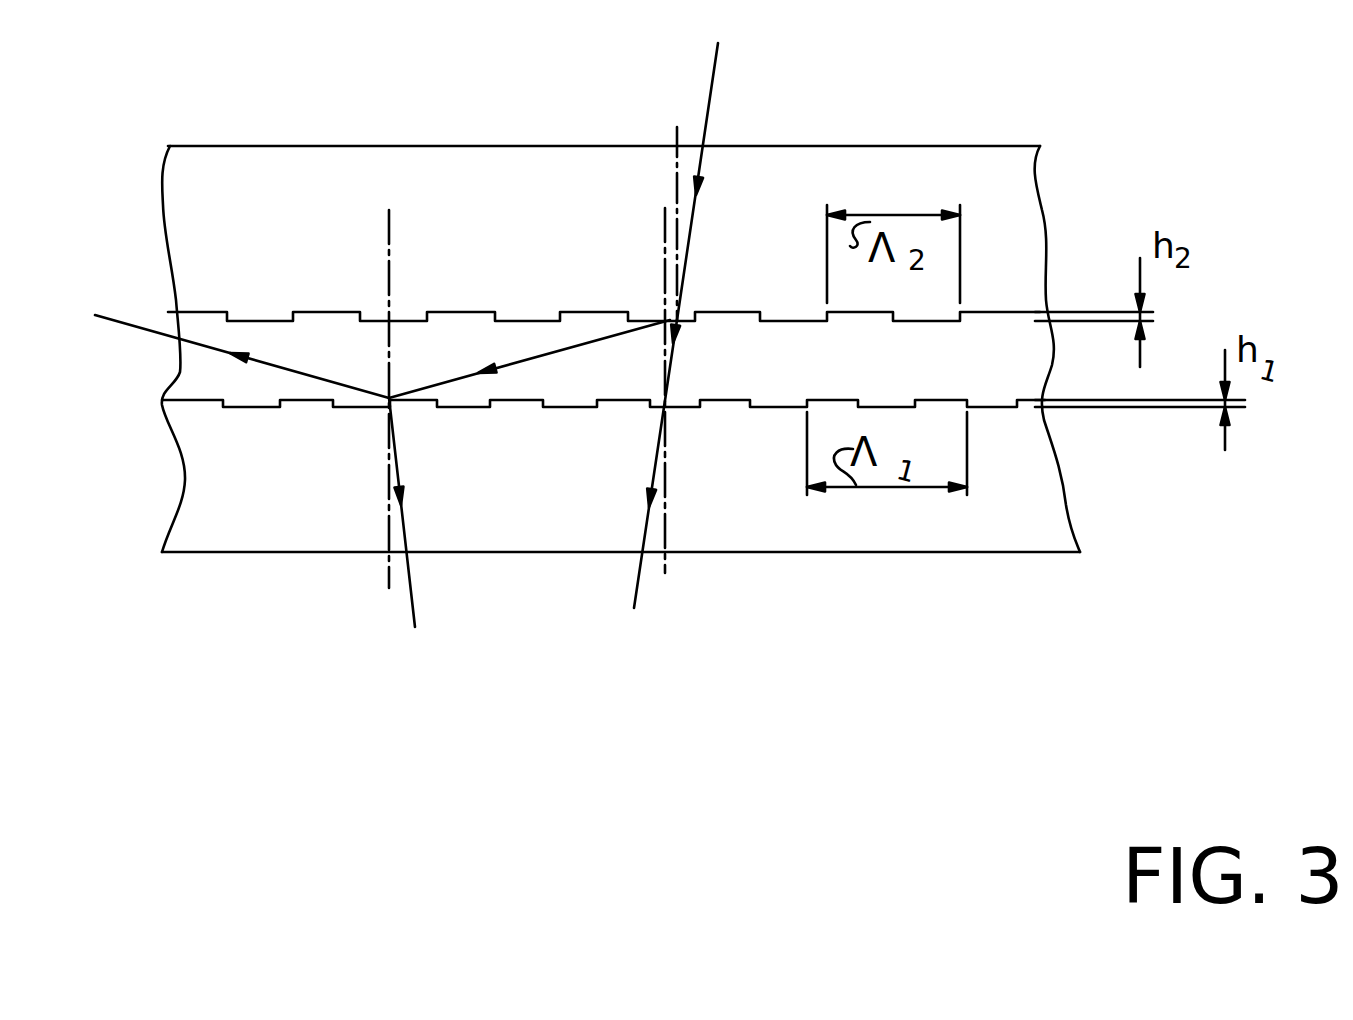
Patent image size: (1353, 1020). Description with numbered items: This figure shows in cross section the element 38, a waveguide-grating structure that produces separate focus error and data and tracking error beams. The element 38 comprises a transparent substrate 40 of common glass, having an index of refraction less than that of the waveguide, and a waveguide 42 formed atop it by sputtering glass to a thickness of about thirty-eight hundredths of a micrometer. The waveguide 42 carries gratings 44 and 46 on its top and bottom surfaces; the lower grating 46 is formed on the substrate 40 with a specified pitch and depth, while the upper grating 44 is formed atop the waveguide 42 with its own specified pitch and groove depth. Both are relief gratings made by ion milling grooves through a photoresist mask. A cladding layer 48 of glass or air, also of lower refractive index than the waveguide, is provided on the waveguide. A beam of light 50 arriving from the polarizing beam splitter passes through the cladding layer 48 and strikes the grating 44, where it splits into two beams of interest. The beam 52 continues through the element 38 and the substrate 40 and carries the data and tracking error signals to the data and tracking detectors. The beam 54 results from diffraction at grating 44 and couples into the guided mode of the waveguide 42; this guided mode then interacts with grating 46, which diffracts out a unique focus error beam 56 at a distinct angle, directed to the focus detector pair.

The element 38 is at (527, 653).
The transparent substrate 40 is at (750, 483).
The waveguide 42 is at (785, 346).
The grating 44 is at (326, 312).
The grating 46 is at (352, 405).
The cladding layer 48 is at (927, 160).
The beam of light 50 is at (708, 108).
The beam 52 is at (640, 582).
The beam 54 is at (550, 352).
The focus error beam 56 is at (413, 577).